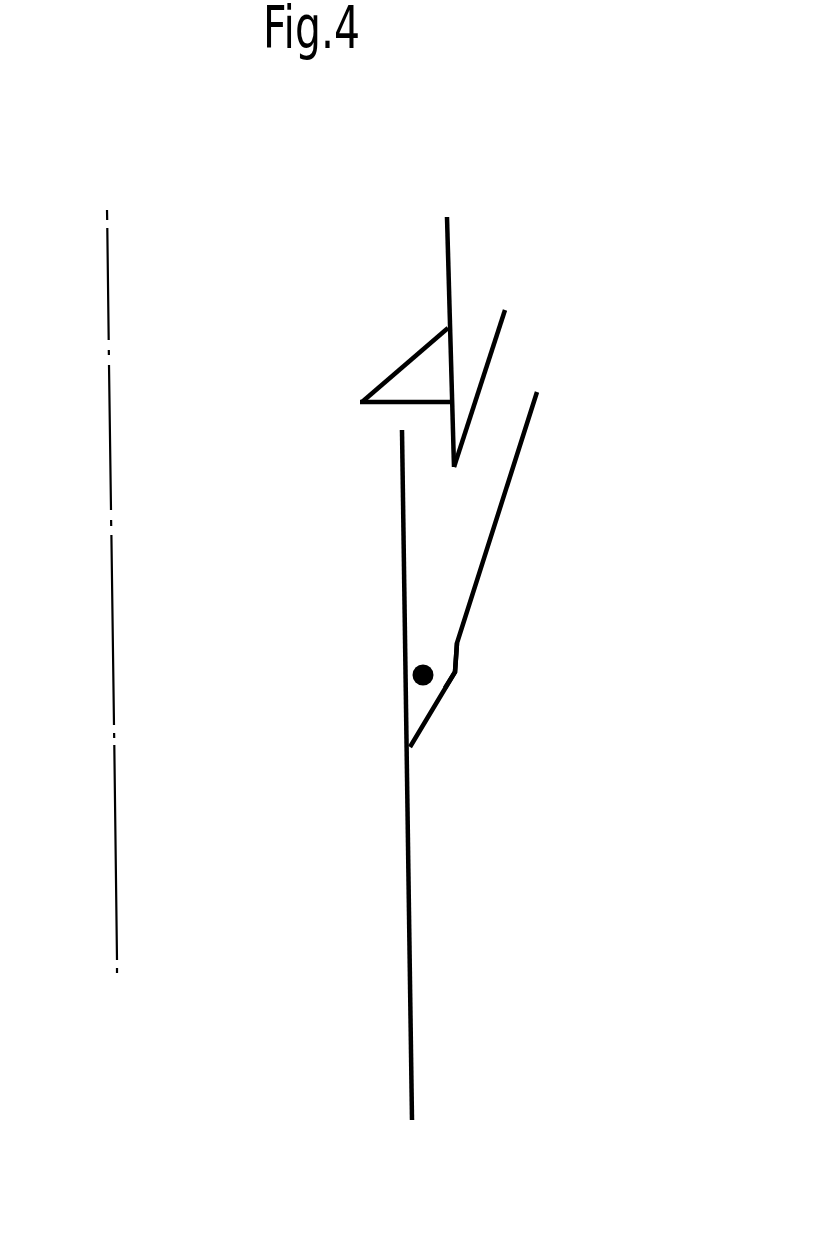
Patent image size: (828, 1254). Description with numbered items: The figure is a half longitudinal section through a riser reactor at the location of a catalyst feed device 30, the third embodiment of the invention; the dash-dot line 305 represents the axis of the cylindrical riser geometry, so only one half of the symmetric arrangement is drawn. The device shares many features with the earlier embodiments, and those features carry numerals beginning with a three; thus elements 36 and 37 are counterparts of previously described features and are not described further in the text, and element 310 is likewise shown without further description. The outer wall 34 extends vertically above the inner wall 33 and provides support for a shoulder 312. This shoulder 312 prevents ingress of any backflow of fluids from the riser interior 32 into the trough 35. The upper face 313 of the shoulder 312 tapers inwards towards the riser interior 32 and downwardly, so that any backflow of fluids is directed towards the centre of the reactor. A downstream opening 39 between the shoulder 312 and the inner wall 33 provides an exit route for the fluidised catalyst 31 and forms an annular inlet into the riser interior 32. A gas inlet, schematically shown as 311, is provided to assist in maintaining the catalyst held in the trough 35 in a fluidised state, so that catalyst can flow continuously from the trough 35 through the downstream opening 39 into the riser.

The catalyst feed device 30 is at (634, 273).
The fluidised catalyst 31 is at (445, 540).
The riser interior 32 is at (185, 773).
The inner wall 33 is at (403, 692).
The outer wall 34 is at (452, 345).
The trough 35 is at (427, 440).
The upper inclined section 36 is at (512, 385).
The bend 37 is at (452, 685).
The downstream opening 39 is at (398, 418).
The axis of the cylindrical riser geometry 305 is at (107, 238).
The intermediate region 310 is at (430, 628).
The gas inlet 311 is at (423, 685).
The shoulder 312 is at (423, 372).
The upper face 313 is at (388, 375).